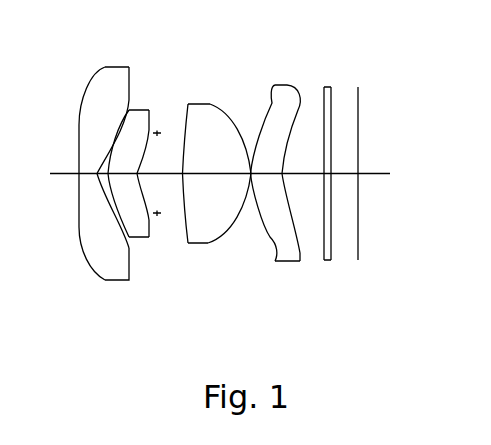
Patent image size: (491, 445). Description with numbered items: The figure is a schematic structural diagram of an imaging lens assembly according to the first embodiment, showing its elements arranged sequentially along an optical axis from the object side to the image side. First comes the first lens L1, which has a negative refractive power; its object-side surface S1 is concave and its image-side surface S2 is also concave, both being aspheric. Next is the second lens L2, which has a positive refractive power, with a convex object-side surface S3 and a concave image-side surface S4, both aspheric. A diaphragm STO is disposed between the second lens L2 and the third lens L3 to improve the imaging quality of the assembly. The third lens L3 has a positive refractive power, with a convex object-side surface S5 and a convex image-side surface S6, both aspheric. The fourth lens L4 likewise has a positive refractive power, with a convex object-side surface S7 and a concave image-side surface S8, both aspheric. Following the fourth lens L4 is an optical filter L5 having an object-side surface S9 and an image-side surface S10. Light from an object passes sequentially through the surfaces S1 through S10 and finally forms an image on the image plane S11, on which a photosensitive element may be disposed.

The diaphragm STO is at (157, 133).
The first lens L1 is at (83, 179).
The second lens L2 is at (147, 179).
The third lens L3 is at (228, 179).
The fourth lens L4 is at (301, 179).
The optical filter L5 is at (376, 179).
The object-side surface of the first lens S1 is at (79, 174).
The image-side surface of the first lens S2 is at (97, 174).
The object-side surface of the second lens S3 is at (108, 174).
The image-side surface of the second lens S4 is at (137, 174).
The object-side surface of the third lens S5 is at (183, 174).
The image-side surface of the third lens S6 is at (251, 174).
The object-side surface of the fourth lens S7 is at (251, 174).
The image-side surface of the fourth lens S8 is at (282, 174).
The object-side surface of the optical filter S9 is at (324, 174).
The image-side surface of the optical filter S10 is at (331, 174).
The image plane S11 is at (358, 174).